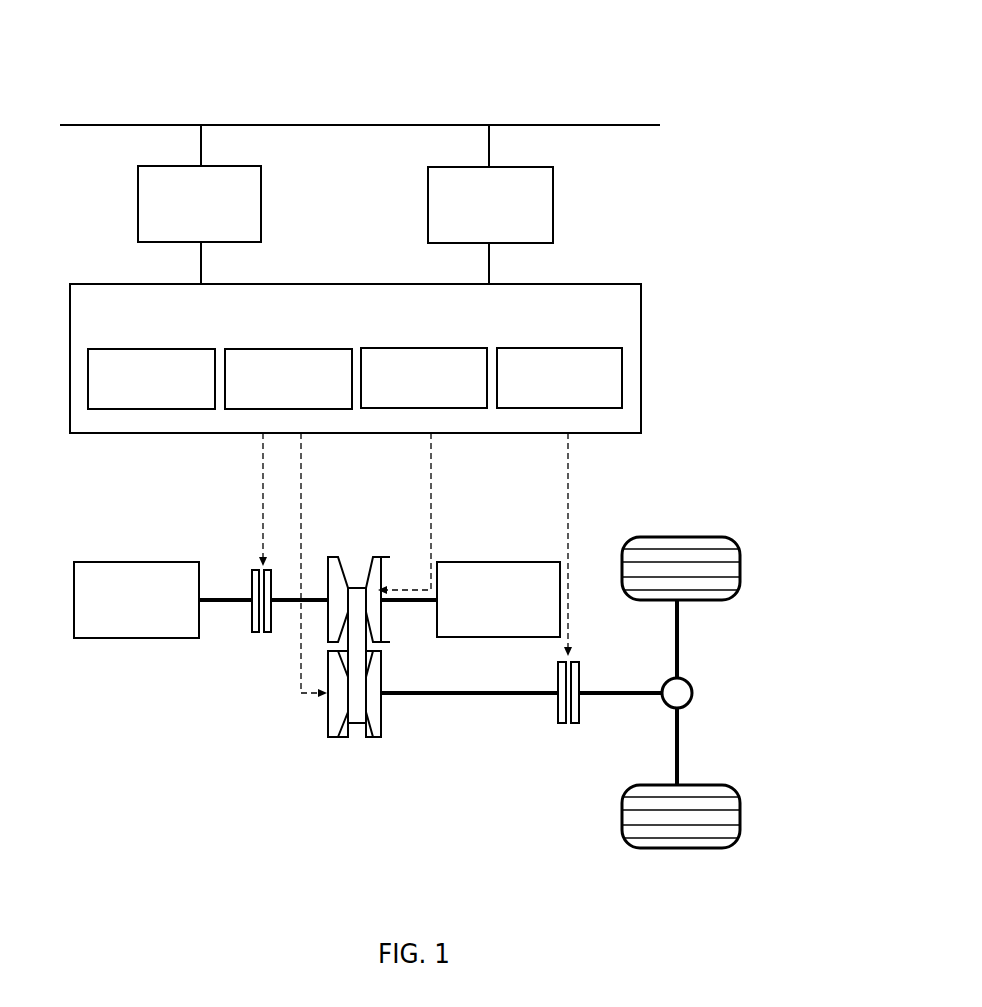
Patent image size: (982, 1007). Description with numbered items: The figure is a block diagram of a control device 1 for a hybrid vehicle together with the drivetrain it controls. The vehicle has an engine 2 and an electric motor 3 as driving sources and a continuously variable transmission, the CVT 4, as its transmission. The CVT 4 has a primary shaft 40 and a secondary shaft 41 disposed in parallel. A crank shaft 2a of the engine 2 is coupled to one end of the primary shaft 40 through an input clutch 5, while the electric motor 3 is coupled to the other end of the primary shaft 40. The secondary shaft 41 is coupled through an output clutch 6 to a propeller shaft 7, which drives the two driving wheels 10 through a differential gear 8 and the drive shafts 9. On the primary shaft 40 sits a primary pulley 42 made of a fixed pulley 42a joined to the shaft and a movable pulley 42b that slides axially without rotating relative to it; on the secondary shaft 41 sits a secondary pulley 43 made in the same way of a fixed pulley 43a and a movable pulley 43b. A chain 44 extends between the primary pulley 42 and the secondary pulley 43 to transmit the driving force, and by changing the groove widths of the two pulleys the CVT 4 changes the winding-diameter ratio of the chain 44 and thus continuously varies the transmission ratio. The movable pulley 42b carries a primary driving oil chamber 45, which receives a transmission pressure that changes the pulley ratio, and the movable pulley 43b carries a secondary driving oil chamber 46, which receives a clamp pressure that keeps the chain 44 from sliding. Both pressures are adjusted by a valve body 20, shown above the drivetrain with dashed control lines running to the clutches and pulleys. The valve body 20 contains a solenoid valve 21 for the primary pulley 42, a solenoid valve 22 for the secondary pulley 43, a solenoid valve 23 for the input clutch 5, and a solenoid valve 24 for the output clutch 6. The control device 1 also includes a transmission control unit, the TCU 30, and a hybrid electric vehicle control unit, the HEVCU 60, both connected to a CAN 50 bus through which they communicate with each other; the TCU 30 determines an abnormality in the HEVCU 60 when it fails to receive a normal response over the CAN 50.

The control device 1 is at (347, 91).
The CAN 50 is at (613, 125).
The transmission control unit (TCU) 30 is at (261, 205).
The hybrid electric vehicle control unit (HEVCU) 60 is at (553, 207).
The valve body 20 is at (641, 350).
The solenoid valve 21 is at (182, 330).
The solenoid valve 22 is at (318, 330).
The solenoid valve 23 is at (452, 330).
The solenoid valve 24 is at (582, 348).
The engine 2 is at (142, 562).
The crank shaft 2a is at (213, 603).
The input clutch 5 is at (265, 634).
The primary shaft 40 is at (290, 598).
The continuously variable transmission (CVT) 4 is at (308, 784).
The primary pulley 42 is at (369, 541).
The fixed pulley 42a is at (330, 555).
The movable pulley 42b is at (380, 555).
The primary driving oil chamber 45 is at (373, 580).
The chain 44 is at (355, 723).
The secondary pulley 43 is at (349, 767).
The fixed pulley 43a is at (376, 738).
The movable pulley 43b is at (341, 738).
The secondary driving oil chamber 46 is at (335, 708).
The secondary shaft 41 is at (403, 695).
The electric motor 3 is at (493, 562).
The output clutch 6 is at (567, 728).
The propeller shaft 7 is at (600, 698).
The differential gear 8 is at (693, 693).
The drive shaft 9 is at (680, 663).
The driving wheel 10 is at (740, 577).